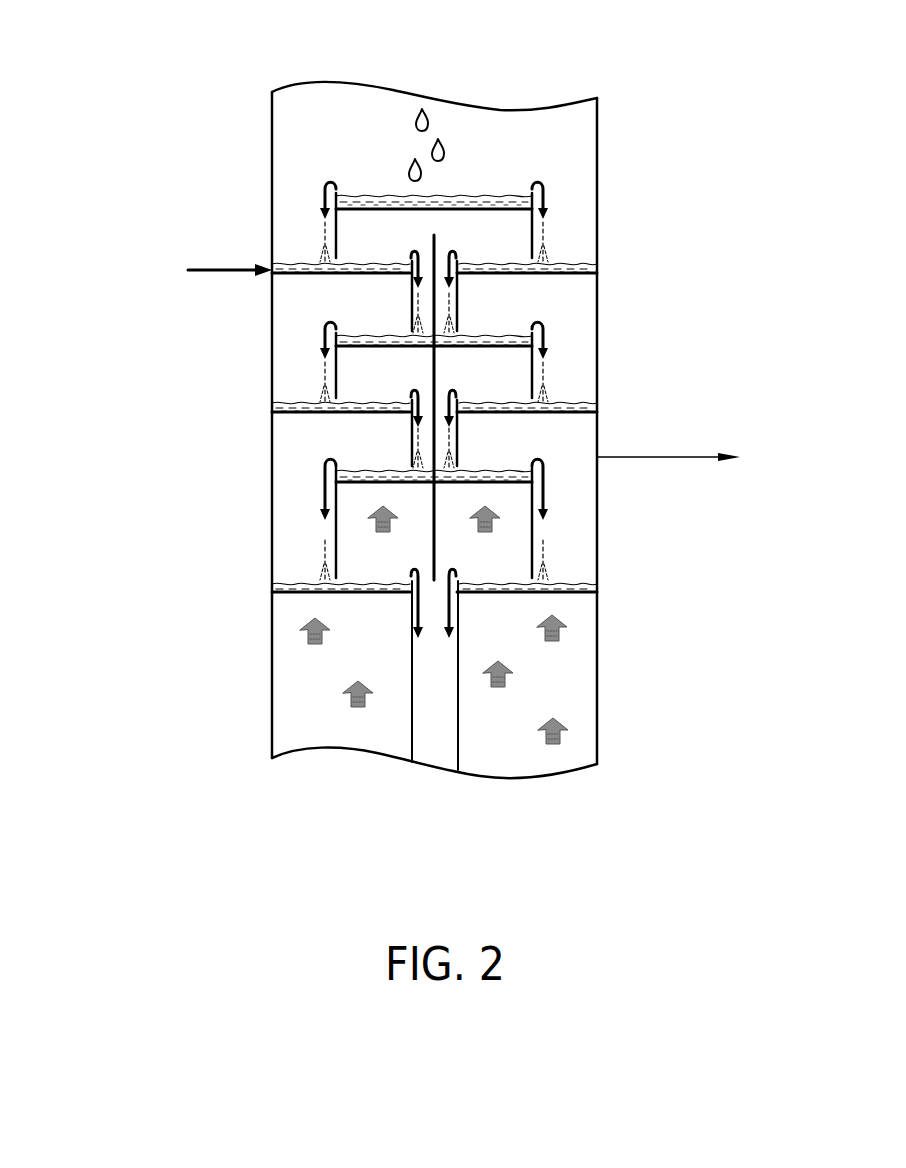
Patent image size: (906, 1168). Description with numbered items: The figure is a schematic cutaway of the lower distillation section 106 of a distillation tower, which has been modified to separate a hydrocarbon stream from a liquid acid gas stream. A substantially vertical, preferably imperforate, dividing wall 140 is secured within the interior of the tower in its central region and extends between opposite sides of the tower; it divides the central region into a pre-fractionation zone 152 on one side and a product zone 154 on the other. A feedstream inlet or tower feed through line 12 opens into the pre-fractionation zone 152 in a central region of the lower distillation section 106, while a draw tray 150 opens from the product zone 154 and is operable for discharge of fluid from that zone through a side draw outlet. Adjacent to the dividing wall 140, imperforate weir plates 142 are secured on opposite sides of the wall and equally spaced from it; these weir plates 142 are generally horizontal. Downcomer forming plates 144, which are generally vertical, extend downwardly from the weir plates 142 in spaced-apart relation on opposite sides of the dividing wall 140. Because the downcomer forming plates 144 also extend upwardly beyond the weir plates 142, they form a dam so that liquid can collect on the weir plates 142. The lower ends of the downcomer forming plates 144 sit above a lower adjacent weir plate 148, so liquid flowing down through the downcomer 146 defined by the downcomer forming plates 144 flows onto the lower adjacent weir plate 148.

The lower distillation section 106 is at (172, 55).
The tower feed line 12 is at (209, 267).
The pre-fractionation zone 152 is at (305, 318).
The weir plates 142 is at (560, 275).
The downcomer forming plates 144 is at (462, 291).
The downcomer 146 is at (443, 272).
The product zone 154 is at (582, 337).
The lower adjacent weir plate 148 is at (508, 343).
The draw tray 150 is at (623, 456).
The dividing wall 140 is at (437, 556).